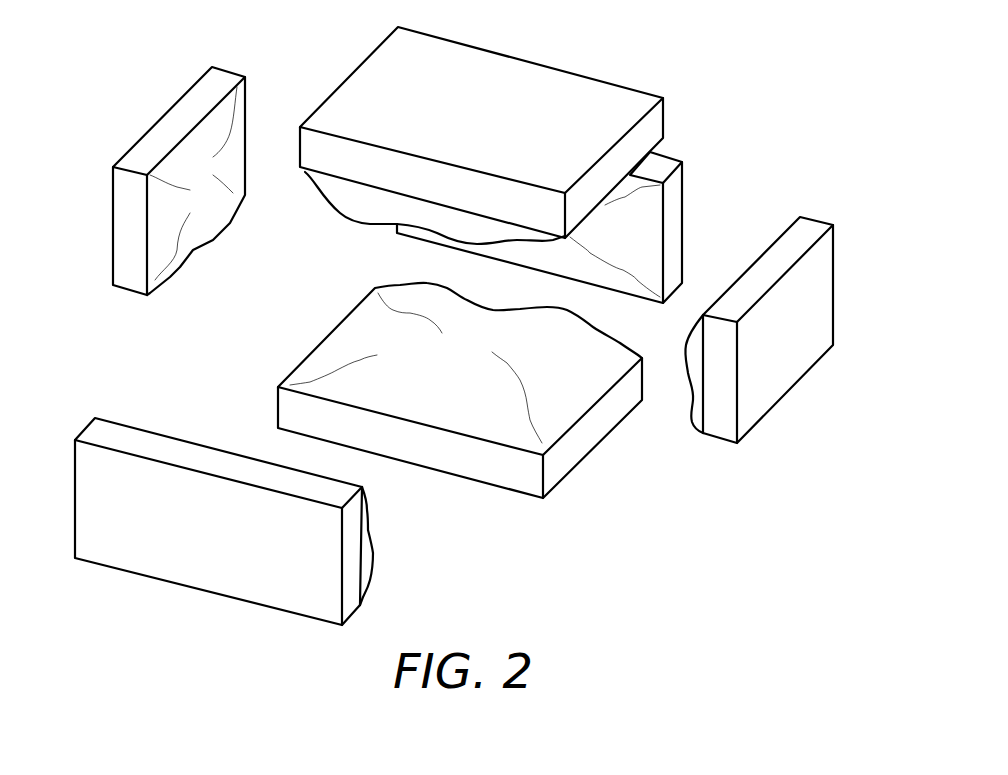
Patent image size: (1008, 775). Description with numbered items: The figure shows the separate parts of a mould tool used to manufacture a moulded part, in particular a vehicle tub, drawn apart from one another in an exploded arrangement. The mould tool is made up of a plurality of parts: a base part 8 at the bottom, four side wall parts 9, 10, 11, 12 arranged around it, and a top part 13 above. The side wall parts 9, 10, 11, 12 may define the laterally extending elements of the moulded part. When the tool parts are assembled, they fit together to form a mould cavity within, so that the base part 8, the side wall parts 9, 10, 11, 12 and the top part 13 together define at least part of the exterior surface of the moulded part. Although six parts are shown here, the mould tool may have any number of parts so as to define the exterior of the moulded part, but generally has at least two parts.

The base part 8 is at (580, 445).
The side wall part 9 is at (90, 472).
The side wall part 10 is at (142, 153).
The side wall part 11 is at (675, 192).
The side wall part 12 is at (820, 275).
The top part 13 is at (590, 95).